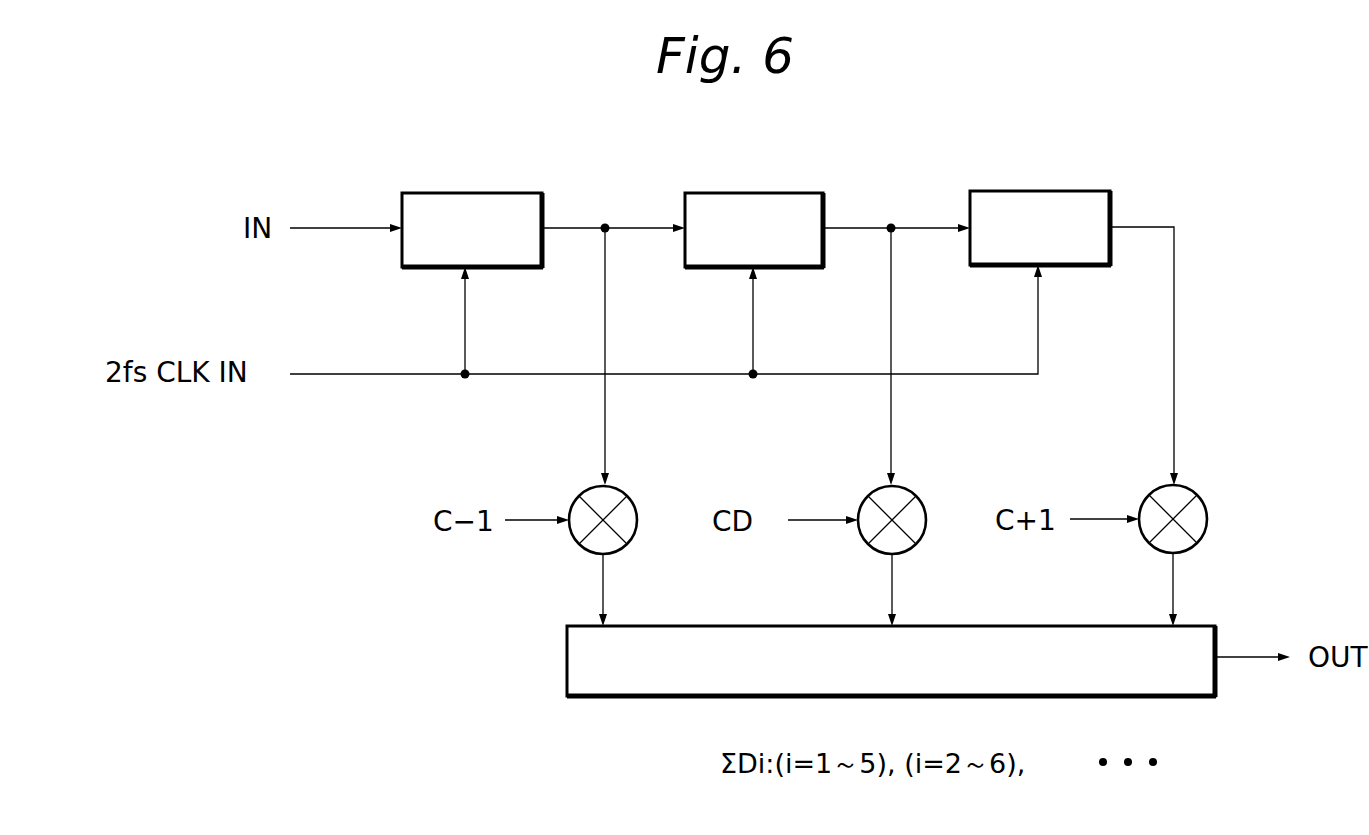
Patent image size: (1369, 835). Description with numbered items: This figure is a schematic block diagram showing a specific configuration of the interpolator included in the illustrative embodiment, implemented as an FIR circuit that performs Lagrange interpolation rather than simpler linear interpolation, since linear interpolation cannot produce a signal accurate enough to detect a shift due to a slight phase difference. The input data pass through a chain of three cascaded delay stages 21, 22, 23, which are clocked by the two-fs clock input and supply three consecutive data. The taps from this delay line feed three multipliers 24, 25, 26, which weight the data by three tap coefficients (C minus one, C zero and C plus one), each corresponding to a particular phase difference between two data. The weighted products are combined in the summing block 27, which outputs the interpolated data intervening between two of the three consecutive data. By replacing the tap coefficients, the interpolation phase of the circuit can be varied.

The D flip-flop (delay element) 21 is at (492, 193).
The D flip-flop (delay element) 22 is at (776, 193).
The D flip-flop (delay element) 23 is at (1060, 191).
The multiplier 24 is at (620, 487).
The multiplier 25 is at (909, 486).
The multiplier 26 is at (1190, 485).
The adder (summing circuit) 27 is at (1218, 630).